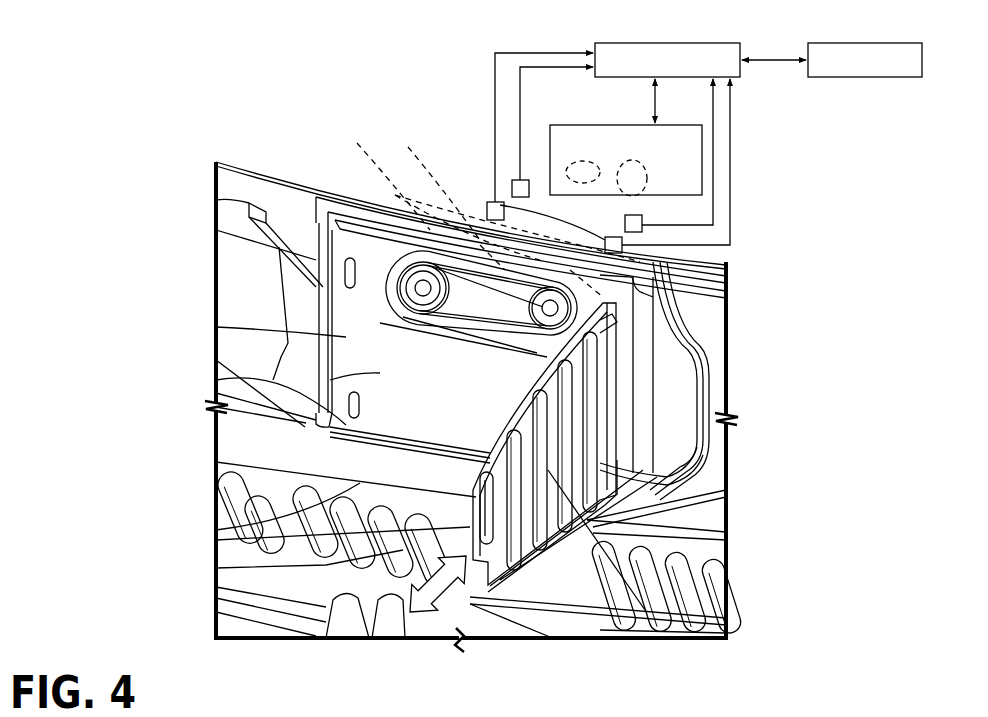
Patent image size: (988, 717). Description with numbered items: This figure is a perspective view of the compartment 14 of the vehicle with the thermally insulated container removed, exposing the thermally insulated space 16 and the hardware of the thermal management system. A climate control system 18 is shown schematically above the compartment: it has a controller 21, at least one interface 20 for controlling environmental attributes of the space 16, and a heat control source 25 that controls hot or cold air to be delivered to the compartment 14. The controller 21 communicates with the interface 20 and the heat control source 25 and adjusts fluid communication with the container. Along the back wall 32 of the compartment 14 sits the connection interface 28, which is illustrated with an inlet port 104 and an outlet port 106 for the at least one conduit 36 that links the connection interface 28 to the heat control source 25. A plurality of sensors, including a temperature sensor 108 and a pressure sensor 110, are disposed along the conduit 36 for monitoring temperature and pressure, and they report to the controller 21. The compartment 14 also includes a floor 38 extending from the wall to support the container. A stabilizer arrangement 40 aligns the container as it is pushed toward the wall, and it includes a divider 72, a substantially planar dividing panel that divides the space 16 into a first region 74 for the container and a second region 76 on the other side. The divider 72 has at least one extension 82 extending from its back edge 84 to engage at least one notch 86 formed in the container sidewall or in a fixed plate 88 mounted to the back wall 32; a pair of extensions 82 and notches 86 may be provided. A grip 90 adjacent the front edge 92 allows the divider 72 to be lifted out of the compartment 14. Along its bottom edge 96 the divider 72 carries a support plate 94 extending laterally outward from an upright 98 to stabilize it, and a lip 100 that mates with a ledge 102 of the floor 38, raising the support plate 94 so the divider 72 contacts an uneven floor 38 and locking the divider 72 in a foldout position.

The compartment 14 is at (305, 178).
The thermally insulated space 16 is at (692, 305).
The climate control system 18 is at (443, 150).
The interface 20 is at (840, 78).
The controller 21 is at (632, 43).
The heat control source 25 is at (670, 185).
The connection interface 28 is at (393, 308).
The back wall 32 is at (660, 392).
The conduit 36 is at (390, 210).
The floor 38 is at (675, 560).
The stabilizer arrangement 40 is at (617, 373).
The divider 72 is at (640, 470).
The first region 74 is at (358, 470).
The second region 76 is at (670, 527).
The extension 82 is at (608, 316).
The back edge 84 is at (600, 337).
The notch 86 is at (346, 290).
The fixed plate 88 is at (303, 427).
The grip 90 is at (400, 553).
The front edge 92 is at (217, 532).
The support plate 94 is at (660, 478).
The bottom edge 96 is at (660, 595).
The upright 98 is at (733, 638).
The lip 100 is at (730, 597).
The ledge 102 is at (705, 580).
The inlet port 104 is at (346, 270).
The outlet port 106 is at (249, 205).
The temperature sensor 108 is at (488, 205).
The pressure sensor 110 is at (625, 220).